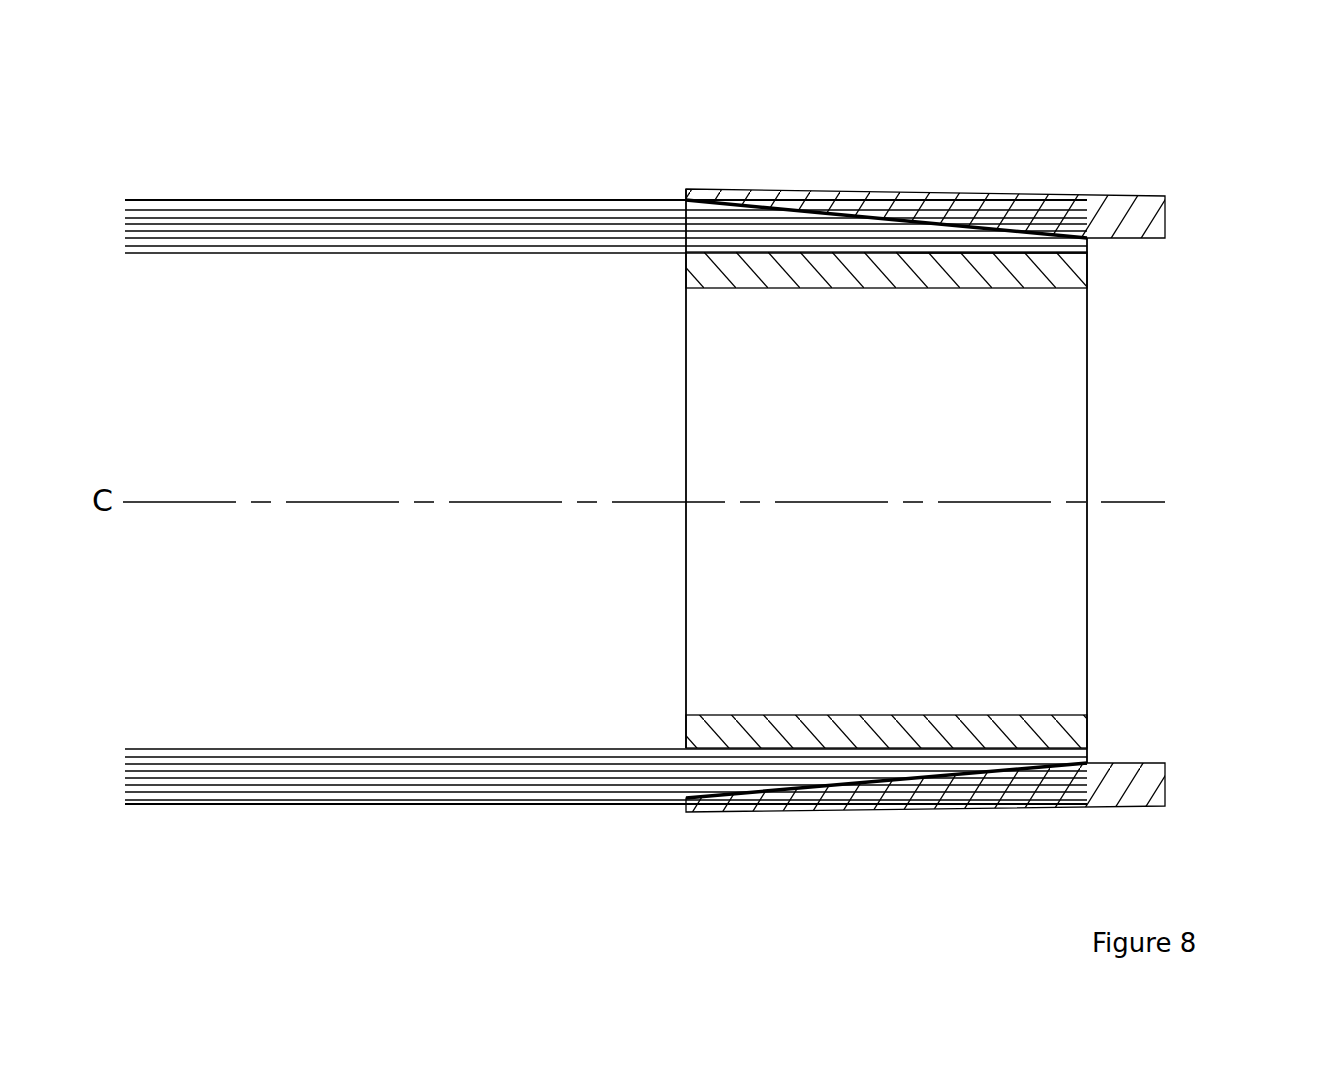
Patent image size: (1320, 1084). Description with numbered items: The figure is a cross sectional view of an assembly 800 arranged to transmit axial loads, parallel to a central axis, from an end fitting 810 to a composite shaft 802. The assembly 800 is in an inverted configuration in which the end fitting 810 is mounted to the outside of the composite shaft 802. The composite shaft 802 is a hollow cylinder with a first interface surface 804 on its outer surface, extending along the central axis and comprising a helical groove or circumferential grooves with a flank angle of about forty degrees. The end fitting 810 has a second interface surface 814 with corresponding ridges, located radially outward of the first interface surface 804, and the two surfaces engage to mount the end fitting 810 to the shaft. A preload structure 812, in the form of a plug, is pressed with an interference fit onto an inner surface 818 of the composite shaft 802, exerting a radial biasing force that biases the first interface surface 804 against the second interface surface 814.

The assembly 800 is at (350, 127).
The composite shaft 802 is at (607, 202).
The first interface surface 804 is at (878, 220).
The end fitting 810 is at (1035, 203).
The preload structure 812 is at (1062, 277).
The second interface surface 814 is at (988, 235).
The inner surface 818 is at (968, 253).